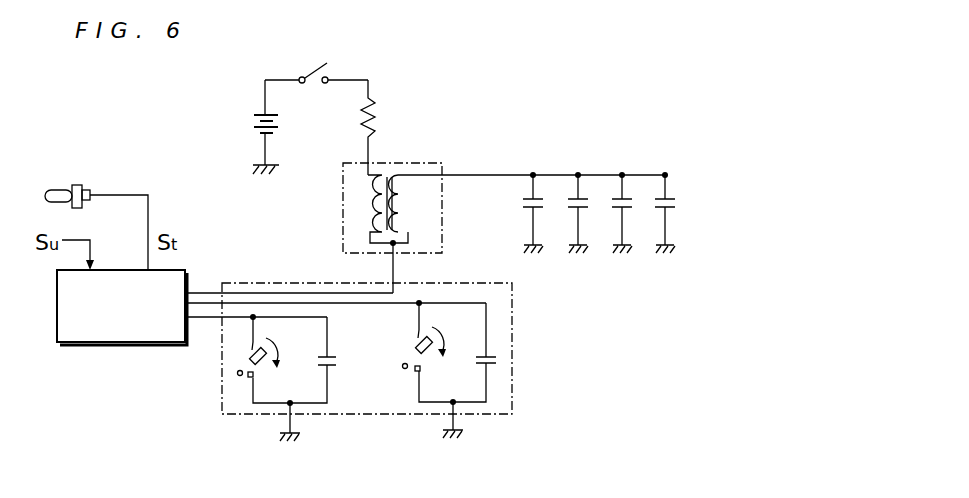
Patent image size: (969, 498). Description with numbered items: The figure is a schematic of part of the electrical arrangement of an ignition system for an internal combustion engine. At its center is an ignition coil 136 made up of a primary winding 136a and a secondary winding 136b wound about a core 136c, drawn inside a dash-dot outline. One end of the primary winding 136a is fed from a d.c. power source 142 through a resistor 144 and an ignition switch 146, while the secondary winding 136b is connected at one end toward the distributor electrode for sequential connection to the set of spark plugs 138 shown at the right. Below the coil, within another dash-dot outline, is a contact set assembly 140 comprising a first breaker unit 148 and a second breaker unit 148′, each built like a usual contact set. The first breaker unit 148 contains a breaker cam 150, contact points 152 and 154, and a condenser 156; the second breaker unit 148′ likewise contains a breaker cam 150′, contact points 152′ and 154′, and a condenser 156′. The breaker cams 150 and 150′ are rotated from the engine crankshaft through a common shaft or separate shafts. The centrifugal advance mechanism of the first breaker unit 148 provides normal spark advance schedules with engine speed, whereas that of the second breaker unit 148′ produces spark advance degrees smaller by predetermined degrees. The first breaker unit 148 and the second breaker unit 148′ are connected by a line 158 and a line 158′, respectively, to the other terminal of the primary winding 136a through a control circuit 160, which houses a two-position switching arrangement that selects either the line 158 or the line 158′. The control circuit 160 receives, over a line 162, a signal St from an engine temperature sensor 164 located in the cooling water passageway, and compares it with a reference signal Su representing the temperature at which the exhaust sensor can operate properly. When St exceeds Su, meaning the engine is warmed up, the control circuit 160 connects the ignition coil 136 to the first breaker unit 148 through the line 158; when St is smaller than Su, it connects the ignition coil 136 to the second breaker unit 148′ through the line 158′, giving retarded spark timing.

The ignition coil 136 is at (343, 230).
The primary winding 136a is at (372, 210).
The secondary winding 136b is at (404, 192).
The core 136c is at (389, 176).
The spark plugs 138 is at (532, 162).
The contact set assembly 140 is at (512, 333).
The d.c. power source 142 is at (250, 122).
The resistor 144 is at (378, 105).
The ignition switch 146 is at (302, 76).
The first breaker unit 148 is at (428, 412).
The second breaker unit 148′ is at (246, 415).
The breaker cam 150 is at (427, 354).
The breaker cam 150′ is at (260, 366).
The contact point 152 is at (402, 366).
The contact point 152′ is at (238, 374).
The contact point 154 is at (415, 372).
The contact point 154′ is at (248, 378).
The condenser 156 is at (497, 358).
The condenser 156′ is at (331, 356).
The line 158 is at (192, 292).
The line 158′ is at (197, 320).
The control circuit 160 is at (95, 346).
The line 162 is at (128, 195).
The engine temperature sensor 164 is at (62, 190).